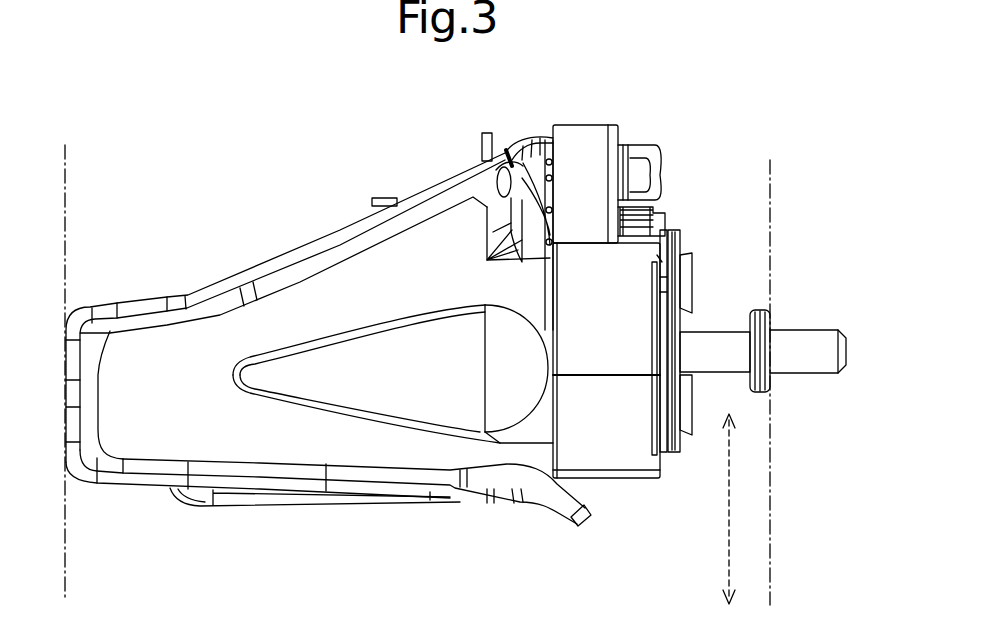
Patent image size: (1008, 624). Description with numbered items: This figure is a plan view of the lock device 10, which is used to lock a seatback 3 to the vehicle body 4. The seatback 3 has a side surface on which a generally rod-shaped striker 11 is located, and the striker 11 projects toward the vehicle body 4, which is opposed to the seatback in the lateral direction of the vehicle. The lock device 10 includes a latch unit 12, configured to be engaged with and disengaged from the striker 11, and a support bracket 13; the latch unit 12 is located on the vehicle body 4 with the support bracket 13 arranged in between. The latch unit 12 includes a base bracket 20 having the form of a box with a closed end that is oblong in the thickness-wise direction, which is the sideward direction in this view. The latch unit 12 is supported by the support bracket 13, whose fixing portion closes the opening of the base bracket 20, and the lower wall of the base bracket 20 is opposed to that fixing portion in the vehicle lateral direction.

The seatback 3 is at (772, 198).
The vehicle body 4 is at (68, 201).
The lock device 10 is at (282, 152).
The striker 11 is at (718, 330).
The latch unit 12 is at (579, 126).
The support bracket 13 is at (245, 275).
The base bracket 20 is at (680, 244).